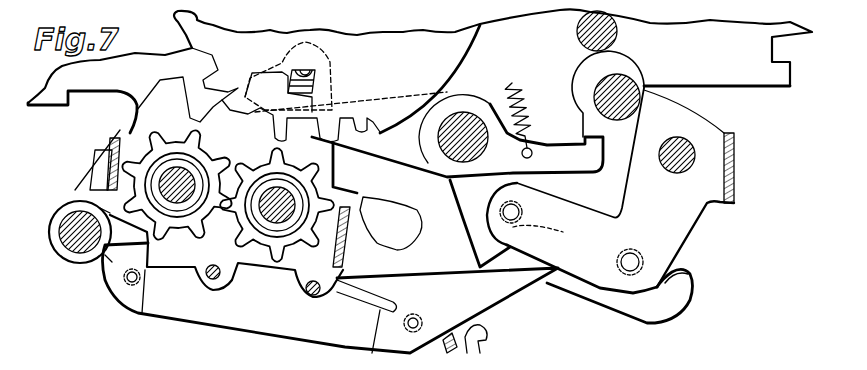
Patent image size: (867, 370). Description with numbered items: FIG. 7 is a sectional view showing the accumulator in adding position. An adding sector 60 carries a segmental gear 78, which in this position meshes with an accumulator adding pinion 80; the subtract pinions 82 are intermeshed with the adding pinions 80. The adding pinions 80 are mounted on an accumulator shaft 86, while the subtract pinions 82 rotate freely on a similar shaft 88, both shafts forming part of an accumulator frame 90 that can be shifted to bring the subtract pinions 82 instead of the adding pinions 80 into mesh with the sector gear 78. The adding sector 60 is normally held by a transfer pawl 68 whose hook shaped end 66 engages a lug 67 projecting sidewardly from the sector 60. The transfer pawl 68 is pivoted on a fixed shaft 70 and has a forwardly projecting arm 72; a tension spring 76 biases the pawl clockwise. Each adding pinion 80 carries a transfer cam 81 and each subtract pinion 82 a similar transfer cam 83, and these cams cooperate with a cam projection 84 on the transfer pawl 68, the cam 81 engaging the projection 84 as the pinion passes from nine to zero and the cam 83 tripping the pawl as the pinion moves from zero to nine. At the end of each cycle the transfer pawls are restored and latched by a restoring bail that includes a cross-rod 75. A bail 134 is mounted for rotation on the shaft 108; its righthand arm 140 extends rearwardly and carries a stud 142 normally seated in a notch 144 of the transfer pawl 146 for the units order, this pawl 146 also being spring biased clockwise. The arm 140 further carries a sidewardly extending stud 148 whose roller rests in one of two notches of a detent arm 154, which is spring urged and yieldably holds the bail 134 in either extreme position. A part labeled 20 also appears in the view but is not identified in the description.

The frame 20 is at (786, 76).
The adding sector 60 is at (462, 59).
The hook shaped end 66 is at (275, 73).
The lug 67 is at (315, 80).
The transfer pawl 68 is at (473, 93).
The fixed shaft 70 is at (450, 117).
The forwardly projecting arm 72 is at (562, 157).
The cross-rod 75 is at (644, 82).
The tension spring 76 is at (523, 85).
The segmental gear 78 is at (84, 99).
The accumulator adding pinion 80 is at (333, 176).
The transfer cam 81 is at (258, 178).
The subtract pinion 82 is at (138, 132).
The transfer cam 83 is at (117, 167).
The cam projection 84 is at (283, 153).
The accumulator shaft 86 is at (290, 207).
The shaft 88 is at (177, 185).
The accumulator frame 90 is at (92, 204).
The shaft 108 is at (694, 150).
The bail 134 is at (734, 170).
The righthand arm 140 is at (583, 265).
The stud 142 is at (550, 237).
The notch 144 is at (523, 202).
The transfer pawl 146 is at (470, 233).
The stud 148 is at (645, 254).
The detent arm 154 is at (677, 287).